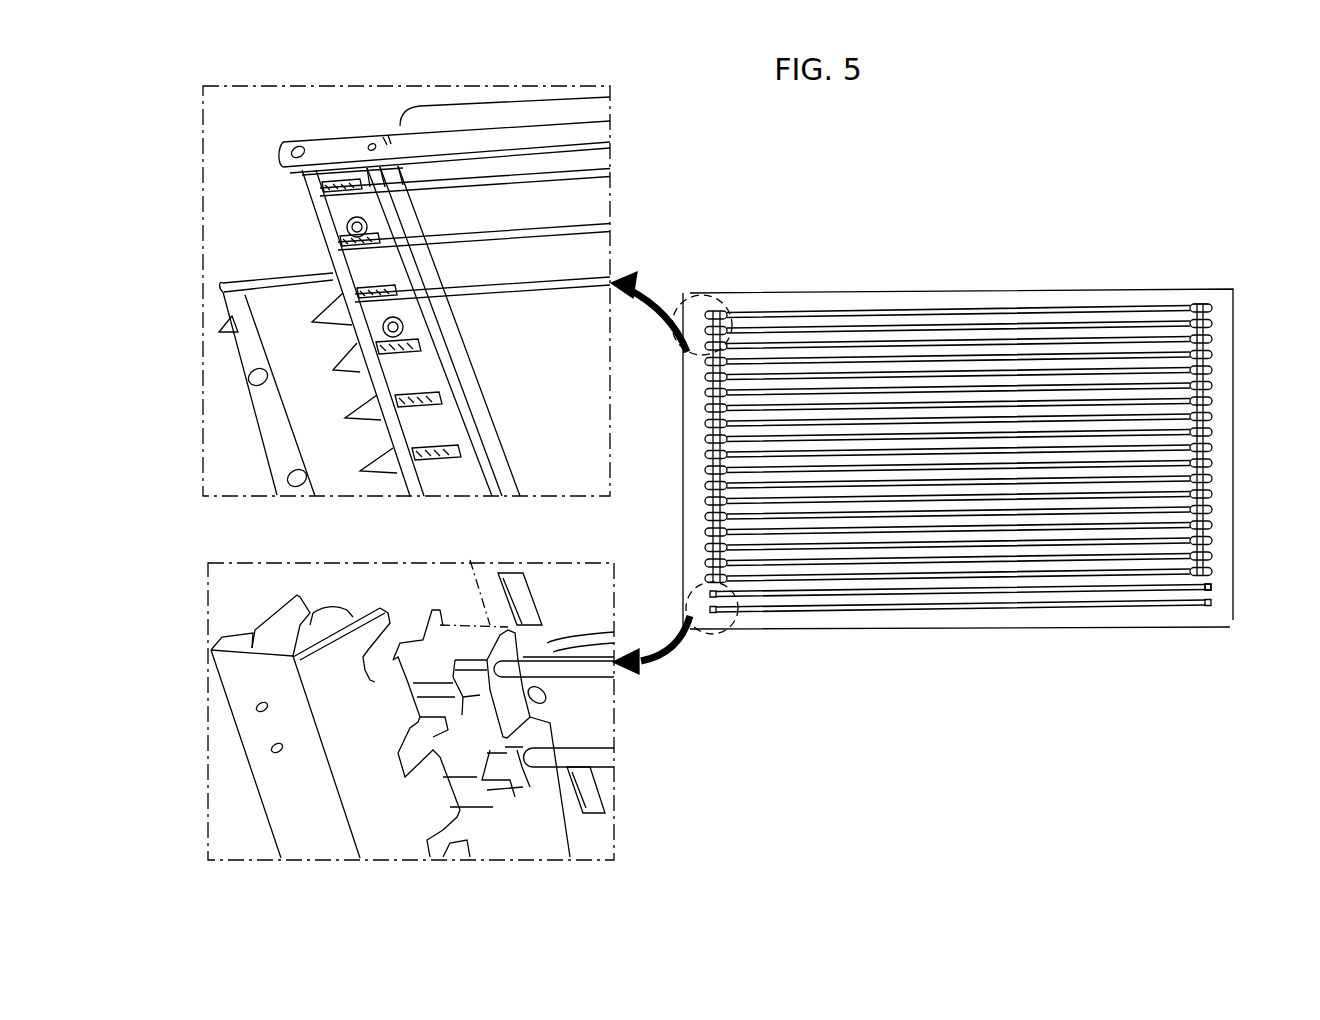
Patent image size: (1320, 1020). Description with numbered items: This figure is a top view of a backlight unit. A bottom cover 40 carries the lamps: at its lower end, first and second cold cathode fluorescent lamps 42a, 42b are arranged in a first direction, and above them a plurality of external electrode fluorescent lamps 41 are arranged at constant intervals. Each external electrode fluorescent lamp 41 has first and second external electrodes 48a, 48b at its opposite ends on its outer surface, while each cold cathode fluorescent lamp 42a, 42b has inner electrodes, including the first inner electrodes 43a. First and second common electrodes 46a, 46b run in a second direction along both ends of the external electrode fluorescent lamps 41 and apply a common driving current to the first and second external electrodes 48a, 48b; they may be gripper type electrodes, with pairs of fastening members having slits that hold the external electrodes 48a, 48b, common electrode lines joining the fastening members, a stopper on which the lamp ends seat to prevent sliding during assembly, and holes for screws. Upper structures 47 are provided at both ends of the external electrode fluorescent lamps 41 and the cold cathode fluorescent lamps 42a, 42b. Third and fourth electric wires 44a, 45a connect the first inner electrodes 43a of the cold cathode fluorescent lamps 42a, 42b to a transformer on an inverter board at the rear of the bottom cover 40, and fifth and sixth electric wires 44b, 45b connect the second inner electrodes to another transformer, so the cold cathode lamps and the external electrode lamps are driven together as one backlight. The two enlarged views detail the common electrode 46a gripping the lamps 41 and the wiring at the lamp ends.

The bottom cover 40 is at (346, 153).
The external electrode fluorescent lamps 41 is at (600, 179).
The first cold cathode fluorescent lamp 42a is at (938, 613).
The second cold cathode fluorescent lamp 42b is at (1016, 594).
The first inner electrodes 43a is at (716, 613).
The third electric wire 44a is at (703, 640).
The fifth electric wire 44b is at (1216, 600).
The fourth electric wire 45a is at (688, 590).
The sixth electric wire 45b is at (1216, 583).
The first common electrode 46a is at (410, 402).
The second common electrode 46b is at (1210, 314).
The upper structures 47 is at (240, 352).
The first external electrodes 48a is at (700, 292).
The second external electrodes 48b is at (1200, 298).